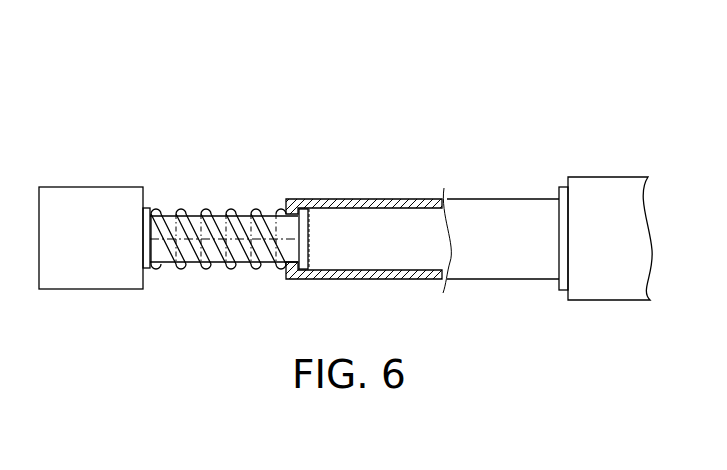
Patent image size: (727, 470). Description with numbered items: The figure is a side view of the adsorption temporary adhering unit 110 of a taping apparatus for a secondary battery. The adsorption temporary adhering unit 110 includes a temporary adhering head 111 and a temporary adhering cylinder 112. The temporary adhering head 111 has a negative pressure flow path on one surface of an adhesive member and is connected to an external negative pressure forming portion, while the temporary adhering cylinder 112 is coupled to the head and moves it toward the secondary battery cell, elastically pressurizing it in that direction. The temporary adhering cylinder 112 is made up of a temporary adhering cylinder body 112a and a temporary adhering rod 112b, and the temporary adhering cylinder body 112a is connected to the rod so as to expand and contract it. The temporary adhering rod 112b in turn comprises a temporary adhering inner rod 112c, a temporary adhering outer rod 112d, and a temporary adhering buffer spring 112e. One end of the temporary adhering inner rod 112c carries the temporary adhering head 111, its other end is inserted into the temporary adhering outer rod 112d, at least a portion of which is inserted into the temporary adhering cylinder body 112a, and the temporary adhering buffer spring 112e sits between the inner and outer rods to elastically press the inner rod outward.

The adsorption temporary adhering unit 110 is at (383, 58).
The temporary adhering head 111 is at (98, 200).
The temporary adhering cylinder 112 is at (487, 96).
The temporary adhering cylinder body 112a is at (607, 188).
The temporary adhering rod 112b is at (353, 134).
The temporary adhering inner rod 112c is at (193, 213).
The temporary adhering outer rod 112d is at (328, 199).
The temporary adhering buffer spring 112e is at (233, 208).